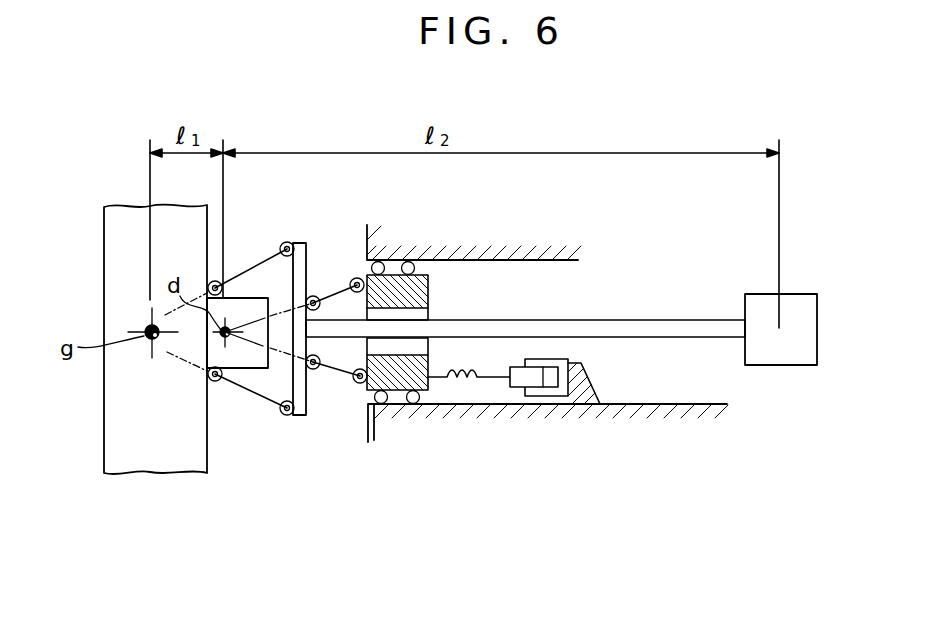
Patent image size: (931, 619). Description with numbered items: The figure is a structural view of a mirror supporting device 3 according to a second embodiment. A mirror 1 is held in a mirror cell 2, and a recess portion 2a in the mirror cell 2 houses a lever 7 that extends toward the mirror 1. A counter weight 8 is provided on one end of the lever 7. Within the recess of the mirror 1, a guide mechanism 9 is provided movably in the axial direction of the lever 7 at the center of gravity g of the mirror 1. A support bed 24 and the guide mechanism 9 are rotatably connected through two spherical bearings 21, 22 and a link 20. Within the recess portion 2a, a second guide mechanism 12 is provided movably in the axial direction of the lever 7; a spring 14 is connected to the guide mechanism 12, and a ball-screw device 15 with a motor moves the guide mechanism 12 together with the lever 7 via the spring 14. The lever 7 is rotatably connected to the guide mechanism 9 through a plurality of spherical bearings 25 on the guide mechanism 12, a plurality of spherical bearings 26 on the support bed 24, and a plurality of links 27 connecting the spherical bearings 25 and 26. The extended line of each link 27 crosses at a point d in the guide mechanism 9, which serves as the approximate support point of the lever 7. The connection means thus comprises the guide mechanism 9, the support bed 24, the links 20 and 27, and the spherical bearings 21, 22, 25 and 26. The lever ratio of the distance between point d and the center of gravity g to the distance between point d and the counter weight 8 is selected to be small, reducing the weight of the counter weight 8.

The mirror 1 is at (147, 476).
The mirror cell 2 is at (372, 410).
The recess portion 2a is at (524, 270).
The mirror supporting device 3 is at (627, 145).
The lever 7 is at (724, 338).
The counter weight 8 is at (788, 366).
The guide mechanism 9 is at (247, 297).
The guide mechanism 12 is at (431, 391).
The spring 14 is at (481, 384).
The ball-screw device 15 is at (558, 398).
The link 20 is at (253, 410).
The spherical bearing 21 is at (217, 382).
The spherical bearing 22 is at (289, 415).
The support bed 24 is at (307, 243).
The spherical bearings 25 is at (362, 384).
The spherical bearings 26 is at (313, 370).
The links 27 is at (333, 367).